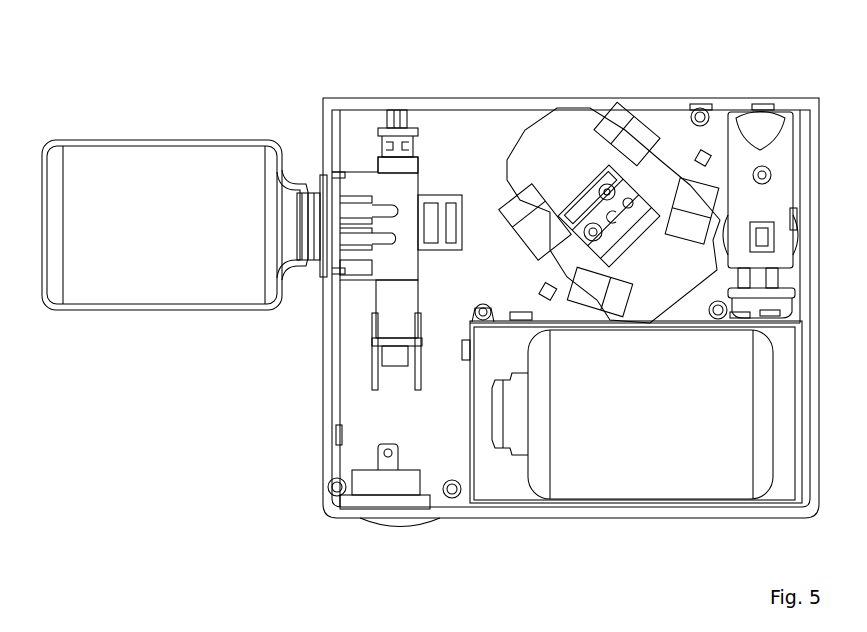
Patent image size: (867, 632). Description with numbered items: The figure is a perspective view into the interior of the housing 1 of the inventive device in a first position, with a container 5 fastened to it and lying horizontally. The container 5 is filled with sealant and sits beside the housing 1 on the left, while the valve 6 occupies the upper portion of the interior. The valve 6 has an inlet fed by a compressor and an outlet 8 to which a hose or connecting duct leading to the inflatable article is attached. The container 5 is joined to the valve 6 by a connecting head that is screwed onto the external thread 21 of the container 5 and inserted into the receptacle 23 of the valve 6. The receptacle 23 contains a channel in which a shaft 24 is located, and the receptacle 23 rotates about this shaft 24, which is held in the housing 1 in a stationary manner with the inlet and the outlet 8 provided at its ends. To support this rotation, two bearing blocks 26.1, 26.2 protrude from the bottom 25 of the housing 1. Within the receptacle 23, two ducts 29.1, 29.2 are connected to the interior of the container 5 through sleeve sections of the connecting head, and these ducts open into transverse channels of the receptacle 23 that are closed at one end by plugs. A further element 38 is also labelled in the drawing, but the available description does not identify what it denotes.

The housing 1 is at (571, 312).
The container 5 is at (138, 308).
The valve 6 is at (375, 176).
The outlet 8 is at (410, 112).
The external thread 21 is at (333, 176).
The receptacle 23 is at (404, 186).
The shaft 24 is at (400, 360).
The bottom 25 is at (431, 455).
The bearing block 26.1 is at (395, 340).
The bearing block 26.2 is at (411, 160).
The duct 29.1 is at (378, 243).
The duct 29.2 is at (376, 206).
The sensor 38 is at (441, 218).